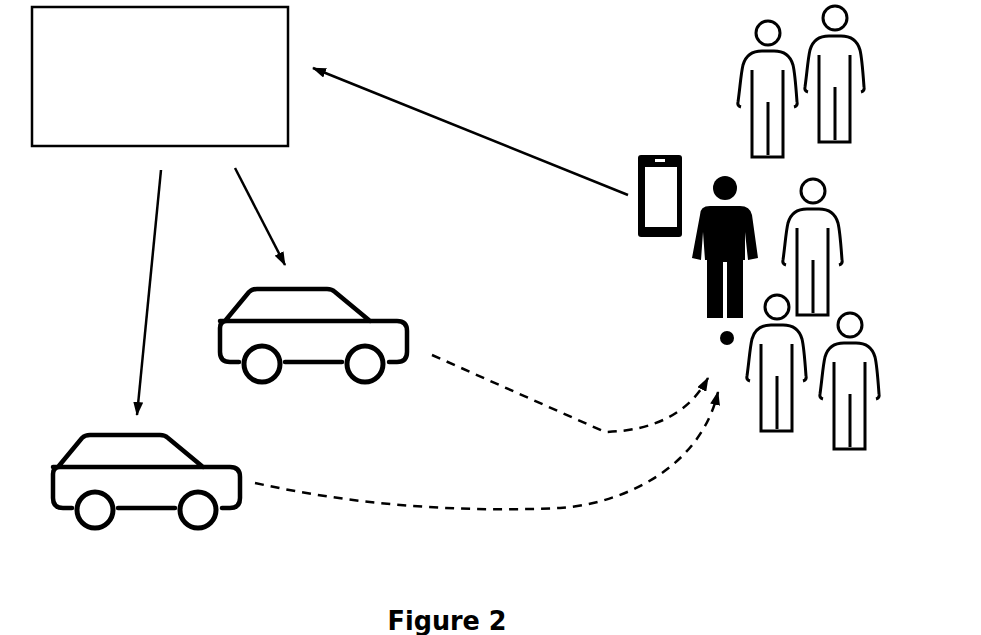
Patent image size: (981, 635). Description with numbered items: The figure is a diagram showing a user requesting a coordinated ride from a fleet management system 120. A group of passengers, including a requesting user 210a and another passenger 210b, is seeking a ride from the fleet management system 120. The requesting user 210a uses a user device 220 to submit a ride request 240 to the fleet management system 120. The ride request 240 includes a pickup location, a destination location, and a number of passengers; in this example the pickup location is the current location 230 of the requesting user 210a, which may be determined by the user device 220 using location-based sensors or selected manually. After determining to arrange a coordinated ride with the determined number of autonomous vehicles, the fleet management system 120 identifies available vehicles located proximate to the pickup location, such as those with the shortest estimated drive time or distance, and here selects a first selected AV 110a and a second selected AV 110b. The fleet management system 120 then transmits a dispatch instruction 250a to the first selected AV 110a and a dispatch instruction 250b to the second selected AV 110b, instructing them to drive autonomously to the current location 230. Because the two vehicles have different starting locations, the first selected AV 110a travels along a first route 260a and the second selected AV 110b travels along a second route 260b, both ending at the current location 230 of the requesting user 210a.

The fleet management system 120 is at (144, 117).
The first selected AV 110a is at (167, 500).
The second selected AV 110b is at (313, 335).
The requesting user 210a is at (690, 282).
The passenger 210b is at (735, 60).
The user device 220 is at (633, 213).
The current location 230 is at (715, 338).
The ride request 240 is at (470, 124).
The dispatch instruction 250a is at (97, 292).
The dispatch instruction 250b is at (348, 216).
The first route 260a is at (358, 505).
The second route 260b is at (522, 410).